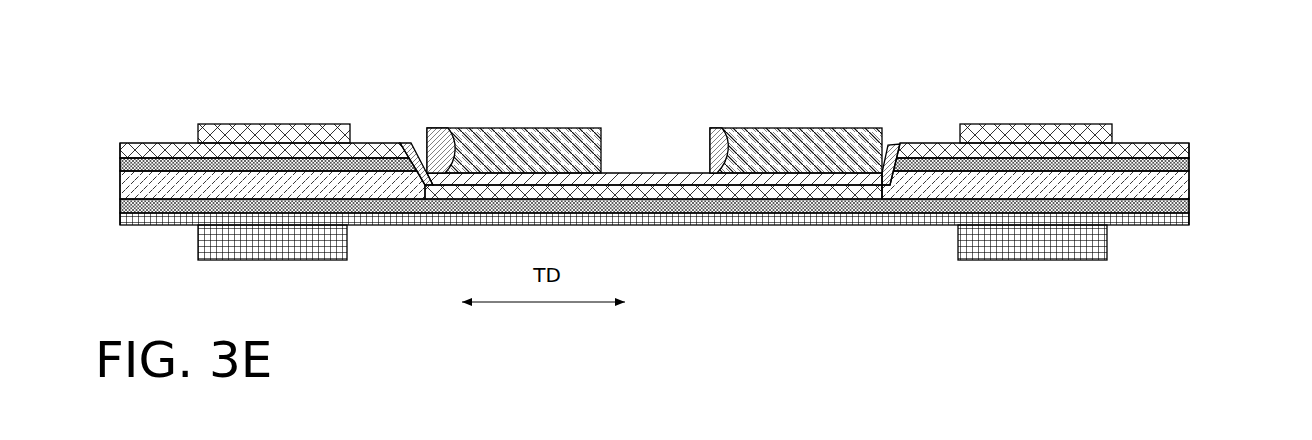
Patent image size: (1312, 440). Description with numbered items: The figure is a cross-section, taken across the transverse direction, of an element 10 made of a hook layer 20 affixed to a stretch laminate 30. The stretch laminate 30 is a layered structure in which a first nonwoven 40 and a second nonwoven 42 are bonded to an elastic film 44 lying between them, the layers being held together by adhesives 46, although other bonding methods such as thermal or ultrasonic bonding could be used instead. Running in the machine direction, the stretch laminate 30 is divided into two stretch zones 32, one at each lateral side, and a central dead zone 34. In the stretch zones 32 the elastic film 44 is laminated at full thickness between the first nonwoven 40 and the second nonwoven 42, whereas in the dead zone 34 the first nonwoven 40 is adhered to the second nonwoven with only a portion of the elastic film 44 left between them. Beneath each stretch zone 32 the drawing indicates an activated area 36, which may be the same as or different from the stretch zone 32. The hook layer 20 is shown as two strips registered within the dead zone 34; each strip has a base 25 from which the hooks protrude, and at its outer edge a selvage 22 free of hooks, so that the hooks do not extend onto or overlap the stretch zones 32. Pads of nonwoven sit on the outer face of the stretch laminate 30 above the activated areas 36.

The element 10 is at (1190, 103).
The hook layer 20 is at (525, 142).
The selvage 22 is at (408, 152).
The base 25 is at (449, 130).
The stretch laminate 30 is at (276, 106).
The stretch zone 32 is at (168, 72).
The dead zone 34 is at (367, 72).
The activated area 36 is at (192, 268).
The first nonwoven 40 is at (152, 141).
The second nonwoven 42 is at (150, 222).
The elastic film 44 is at (132, 178).
The adhesives 46 is at (121, 151).